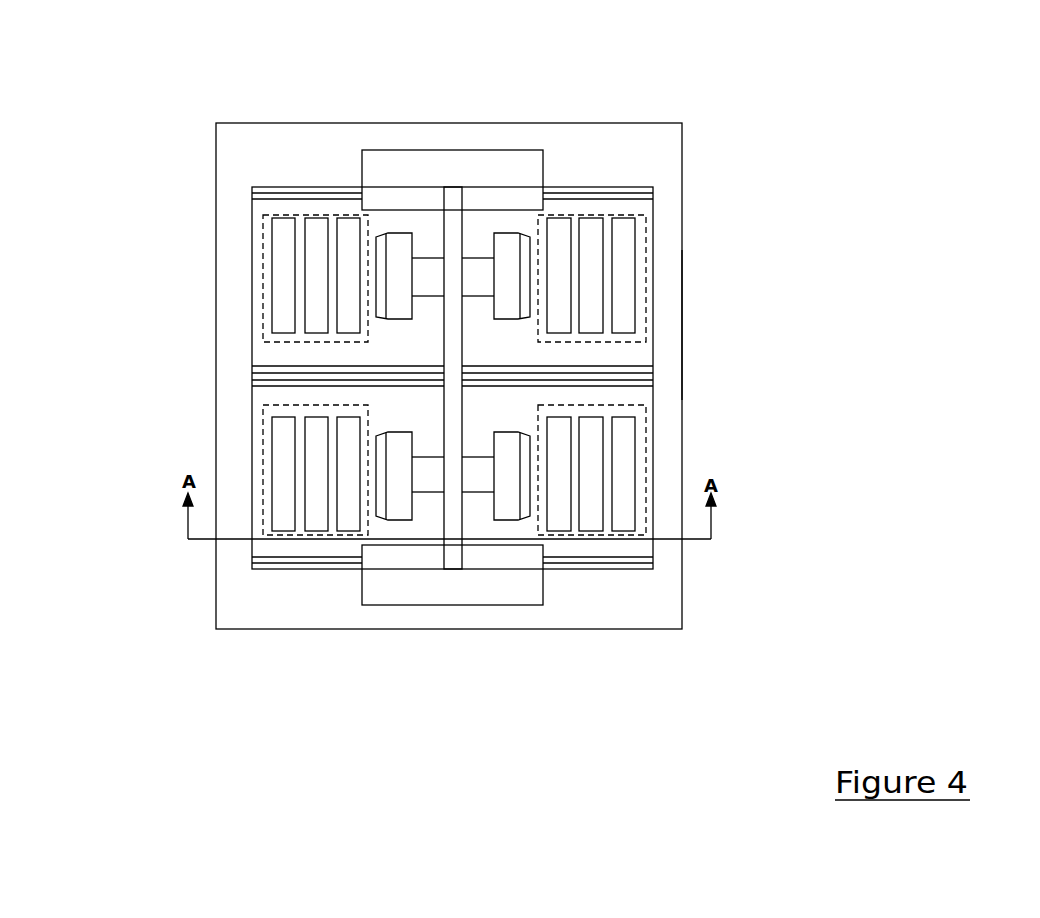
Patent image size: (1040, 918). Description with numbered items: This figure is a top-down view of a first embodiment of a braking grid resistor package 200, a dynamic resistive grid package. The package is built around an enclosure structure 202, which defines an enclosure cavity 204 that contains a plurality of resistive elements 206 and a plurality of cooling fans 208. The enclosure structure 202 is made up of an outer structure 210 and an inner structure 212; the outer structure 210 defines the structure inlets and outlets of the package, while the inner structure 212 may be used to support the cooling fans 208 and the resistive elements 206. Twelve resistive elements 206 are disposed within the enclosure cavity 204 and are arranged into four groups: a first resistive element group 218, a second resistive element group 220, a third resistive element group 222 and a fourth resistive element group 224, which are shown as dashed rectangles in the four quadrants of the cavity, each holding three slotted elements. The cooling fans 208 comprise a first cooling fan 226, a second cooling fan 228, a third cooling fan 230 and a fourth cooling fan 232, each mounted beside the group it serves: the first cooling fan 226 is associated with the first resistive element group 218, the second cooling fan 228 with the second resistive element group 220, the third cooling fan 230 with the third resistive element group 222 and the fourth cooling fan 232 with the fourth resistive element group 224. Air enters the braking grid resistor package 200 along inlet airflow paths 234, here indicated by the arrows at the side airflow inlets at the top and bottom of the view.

The braking grid resistor package 200 is at (563, 337).
The enclosure structure 202 is at (752, 290).
The enclosure cavity 204 is at (390, 347).
The resistive elements 206 is at (444, 420).
The cooling fans 208 is at (451, 375).
The outer structure 210 is at (752, 365).
The inner structure 212 is at (383, 373).
The first resistive element group 218 is at (245, 470).
The second resistive element group 220 is at (244, 278).
The third resistive element group 222 is at (661, 275).
The fourth resistive element group 224 is at (661, 464).
The first cooling fan 226 is at (407, 458).
The second cooling fan 228 is at (407, 296).
The third cooling fan 230 is at (520, 296).
The fourth cooling fan 232 is at (520, 458).
The inlet airflow paths 234 is at (350, 173).